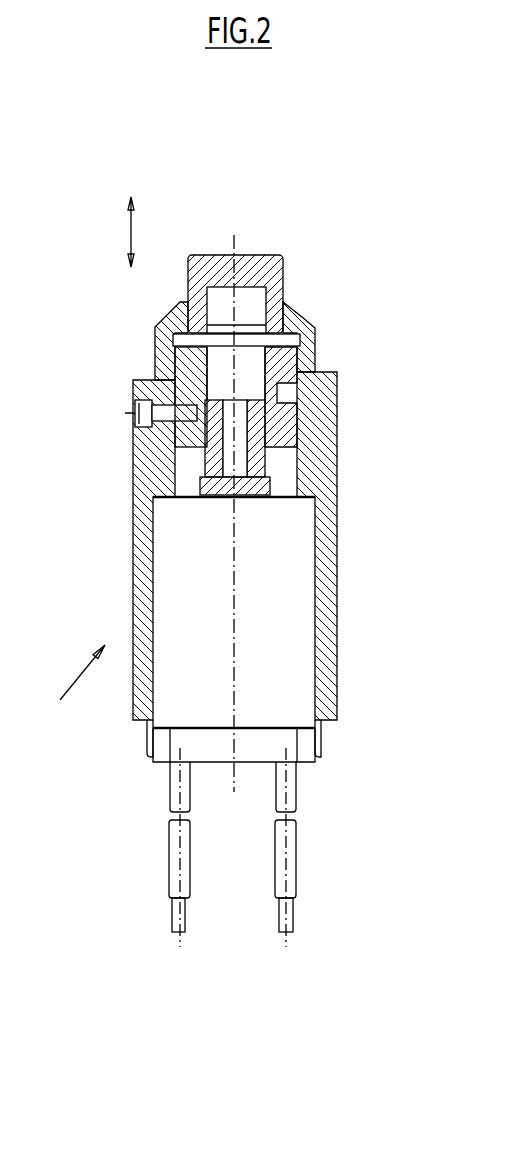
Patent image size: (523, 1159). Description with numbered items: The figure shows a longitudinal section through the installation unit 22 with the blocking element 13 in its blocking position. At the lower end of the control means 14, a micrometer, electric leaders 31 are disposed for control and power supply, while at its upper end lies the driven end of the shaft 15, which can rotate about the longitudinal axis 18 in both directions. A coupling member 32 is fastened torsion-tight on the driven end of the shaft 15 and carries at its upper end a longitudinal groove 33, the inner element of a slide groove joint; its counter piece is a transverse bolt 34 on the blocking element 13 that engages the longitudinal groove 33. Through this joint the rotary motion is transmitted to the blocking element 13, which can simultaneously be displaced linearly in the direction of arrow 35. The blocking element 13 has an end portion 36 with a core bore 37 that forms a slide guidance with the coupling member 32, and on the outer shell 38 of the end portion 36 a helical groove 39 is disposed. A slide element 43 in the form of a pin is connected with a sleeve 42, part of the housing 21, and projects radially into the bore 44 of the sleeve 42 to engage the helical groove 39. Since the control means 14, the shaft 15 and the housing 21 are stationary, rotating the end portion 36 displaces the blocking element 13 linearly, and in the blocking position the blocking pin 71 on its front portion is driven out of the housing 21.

The blocking element 13 is at (522, 240).
The control means 14 is at (522, 657).
The shaft 15 is at (522, 563).
The longitudinal axis 18 is at (233, 673).
The housing 21 is at (522, 703).
The installation unit 22 is at (60, 700).
The electric leaders 31 is at (286, 932).
The coupling member 32 is at (140, 425).
The longitudinal groove 33 is at (522, 340).
The transverse bolt 34 is at (522, 290).
The arrow 35 is at (130, 233).
The end portion 36 is at (522, 423).
The core bore 37 is at (224, 290).
The outer shell 38 is at (153, 368).
The helical groove 39 is at (522, 380).
The sleeve 42 is at (522, 515).
The slide element 43 is at (135, 392).
The bore 44 is at (185, 480).
The blocking pin 71 is at (201, 263).